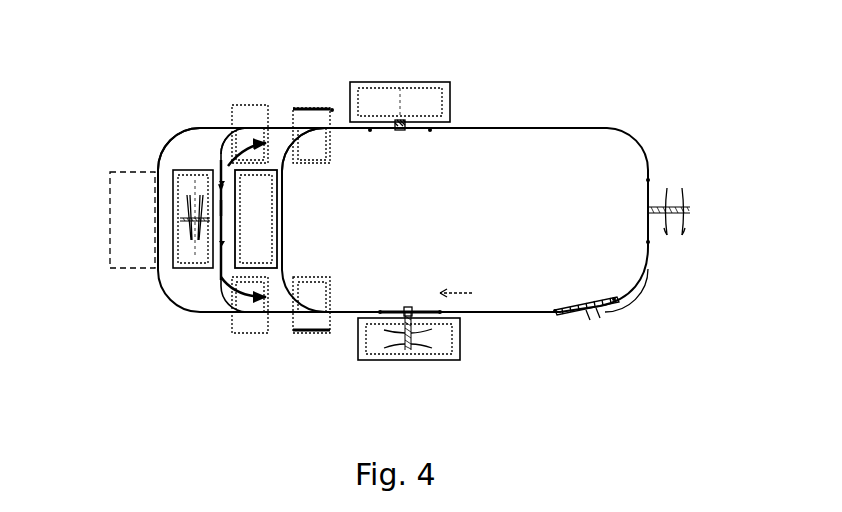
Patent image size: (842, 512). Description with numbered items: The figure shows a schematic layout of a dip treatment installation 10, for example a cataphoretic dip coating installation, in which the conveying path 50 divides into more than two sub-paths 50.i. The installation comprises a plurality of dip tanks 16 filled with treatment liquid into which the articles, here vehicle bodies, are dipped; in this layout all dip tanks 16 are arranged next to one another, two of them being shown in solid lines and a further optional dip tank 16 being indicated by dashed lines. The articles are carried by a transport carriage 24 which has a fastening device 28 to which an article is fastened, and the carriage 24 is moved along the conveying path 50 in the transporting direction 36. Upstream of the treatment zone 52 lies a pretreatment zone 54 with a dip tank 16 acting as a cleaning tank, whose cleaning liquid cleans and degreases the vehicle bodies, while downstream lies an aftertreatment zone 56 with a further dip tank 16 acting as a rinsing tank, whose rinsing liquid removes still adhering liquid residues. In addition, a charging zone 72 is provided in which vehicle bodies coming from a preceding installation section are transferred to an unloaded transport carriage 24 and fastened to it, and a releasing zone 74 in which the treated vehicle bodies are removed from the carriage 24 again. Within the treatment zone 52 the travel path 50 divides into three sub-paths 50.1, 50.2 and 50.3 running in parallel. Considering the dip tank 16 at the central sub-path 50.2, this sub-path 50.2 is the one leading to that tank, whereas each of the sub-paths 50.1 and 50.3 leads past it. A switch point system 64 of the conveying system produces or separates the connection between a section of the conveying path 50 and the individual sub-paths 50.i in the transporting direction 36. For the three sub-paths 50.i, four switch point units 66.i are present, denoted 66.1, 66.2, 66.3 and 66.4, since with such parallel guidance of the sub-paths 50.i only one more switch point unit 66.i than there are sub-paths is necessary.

The dip treatment installation 10 is at (606, 72).
The dip tank 16 is at (110, 232).
The transport carriage 24 is at (227, 208).
The fastening device 28 is at (182, 203).
The transporting direction 36 is at (455, 290).
The conveying path 50 is at (641, 131).
The first sub-path 50.1 is at (283, 187).
The second sub-path 50.2 is at (221, 285).
The third sub-path 50.3 is at (158, 268).
The sub-paths 50.i is at (250, 86).
The treatment zone 52 is at (198, 76).
The pretreatment zone 54 is at (425, 367).
The aftertreatment zone 56 is at (409, 76).
The switch point system 64 is at (278, 93).
The switch point unit 66.1 is at (312, 334).
The switch point unit 66.2 is at (250, 334).
The switch point unit 66.3 is at (232, 125).
The switch point unit 66.4 is at (318, 108).
The switch point units 66.i is at (281, 346).
The charging zone 72 is at (679, 169).
The releasing zone 74 is at (679, 244).